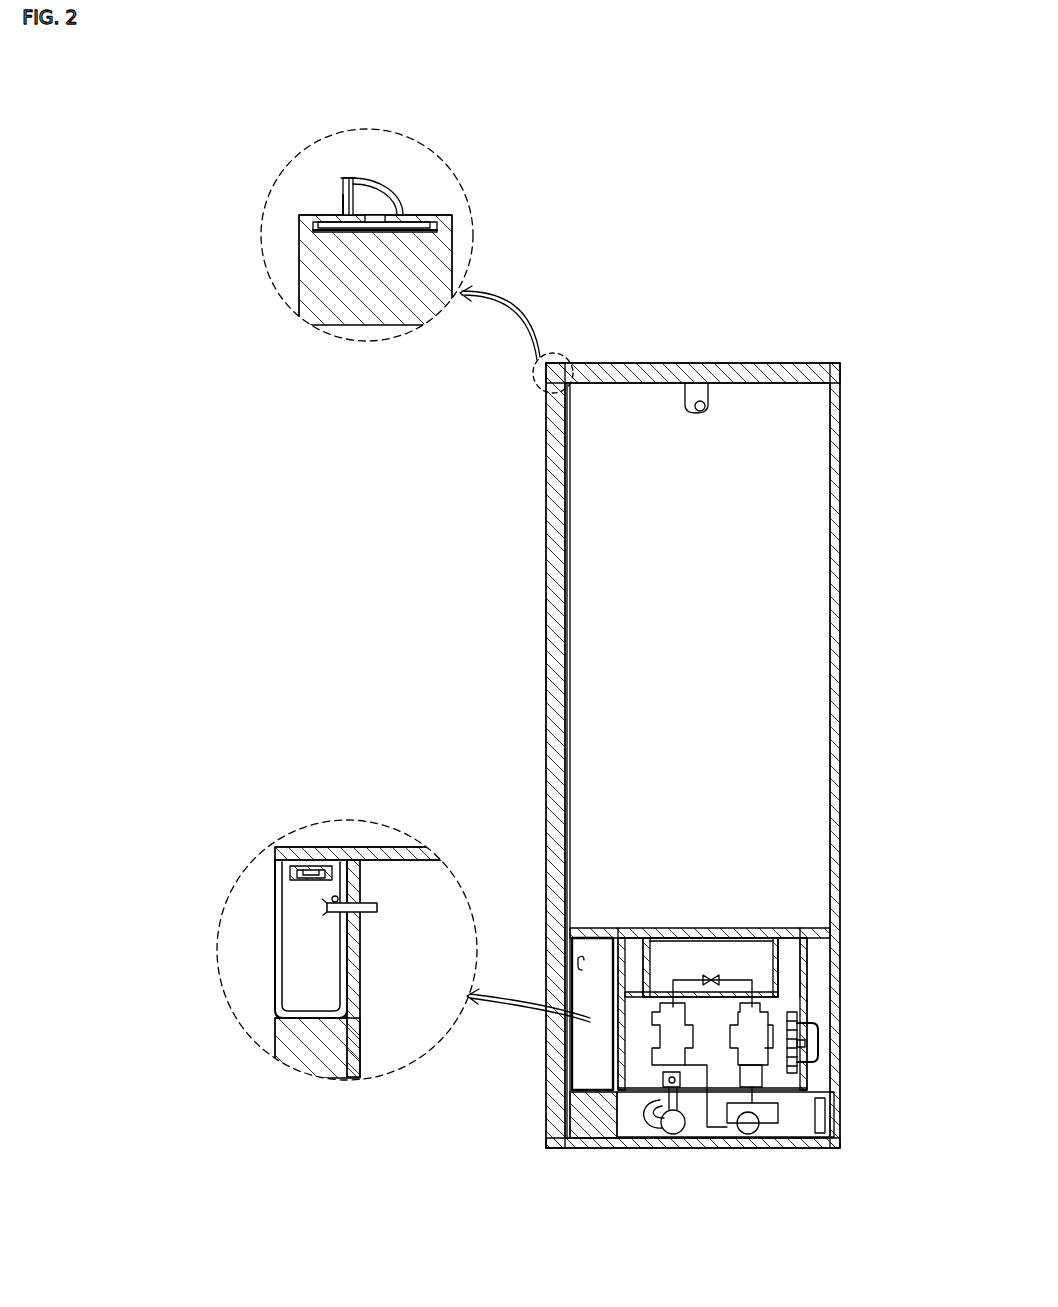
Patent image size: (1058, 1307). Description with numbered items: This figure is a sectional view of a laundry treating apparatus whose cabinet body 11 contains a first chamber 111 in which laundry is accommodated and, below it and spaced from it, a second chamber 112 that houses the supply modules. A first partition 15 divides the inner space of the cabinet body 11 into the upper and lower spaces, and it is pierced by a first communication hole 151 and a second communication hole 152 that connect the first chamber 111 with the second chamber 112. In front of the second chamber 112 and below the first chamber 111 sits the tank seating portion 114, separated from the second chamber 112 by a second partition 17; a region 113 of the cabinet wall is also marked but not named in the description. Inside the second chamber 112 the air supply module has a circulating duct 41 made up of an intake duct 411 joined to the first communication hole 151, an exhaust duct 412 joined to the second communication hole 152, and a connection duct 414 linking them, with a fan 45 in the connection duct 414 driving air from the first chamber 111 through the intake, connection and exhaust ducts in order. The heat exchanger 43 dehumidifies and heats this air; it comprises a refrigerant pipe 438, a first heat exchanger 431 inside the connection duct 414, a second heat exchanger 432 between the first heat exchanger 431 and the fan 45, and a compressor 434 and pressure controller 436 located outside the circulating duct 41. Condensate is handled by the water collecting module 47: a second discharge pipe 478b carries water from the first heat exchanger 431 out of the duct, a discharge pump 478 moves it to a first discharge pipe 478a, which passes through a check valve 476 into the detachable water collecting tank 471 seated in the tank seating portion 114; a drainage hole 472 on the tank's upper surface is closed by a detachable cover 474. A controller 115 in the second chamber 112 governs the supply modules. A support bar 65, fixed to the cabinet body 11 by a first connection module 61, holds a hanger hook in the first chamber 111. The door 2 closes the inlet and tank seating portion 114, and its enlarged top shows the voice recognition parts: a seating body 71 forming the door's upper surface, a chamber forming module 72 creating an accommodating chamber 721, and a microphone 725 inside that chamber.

The door 2 is at (553, 368).
The cabinet body 11 is at (838, 486).
The first chamber 111 is at (803, 437).
The second chamber 112 is at (816, 1086).
The insulation 113 is at (570, 662).
The tank seating portion 114 is at (300, 858).
The controller 115 is at (820, 1115).
The first partition 15 is at (598, 933).
The first communication hole 151 is at (633, 933).
The second communication hole 152 is at (792, 930).
The second partition 17 is at (585, 950).
The circulating duct 41 is at (905, 925).
The intake duct 411 is at (638, 980).
The exhaust duct 412 is at (792, 982).
The connection duct 414 is at (645, 1007).
The heat exchanger 43 is at (739, 1121).
The first heat exchanger 431 is at (677, 1048).
The second heat exchanger 432 is at (753, 1050).
The compressor 434 is at (748, 1125).
The pressure controller 436 is at (717, 980).
The refrigerant pipe 438 is at (770, 1062).
The fan 45 is at (794, 1046).
The water collecting module 47 is at (234, 914).
The water collecting tank 471 is at (583, 1063).
The drainage hole 472 is at (310, 886).
The cover 474 is at (295, 868).
The check valve 476 is at (327, 905).
The discharge pump 478 is at (679, 1127).
The first discharge pipe 478a is at (652, 1120).
The second discharge pipe 478b is at (655, 1122).
The first connection module 61 is at (704, 398).
The support bar 65 is at (706, 405).
The seating body 71 is at (385, 210).
The chamber forming module 72 is at (365, 200).
The accommodating chamber 721 is at (343, 203).
The microphone 725 is at (383, 215).